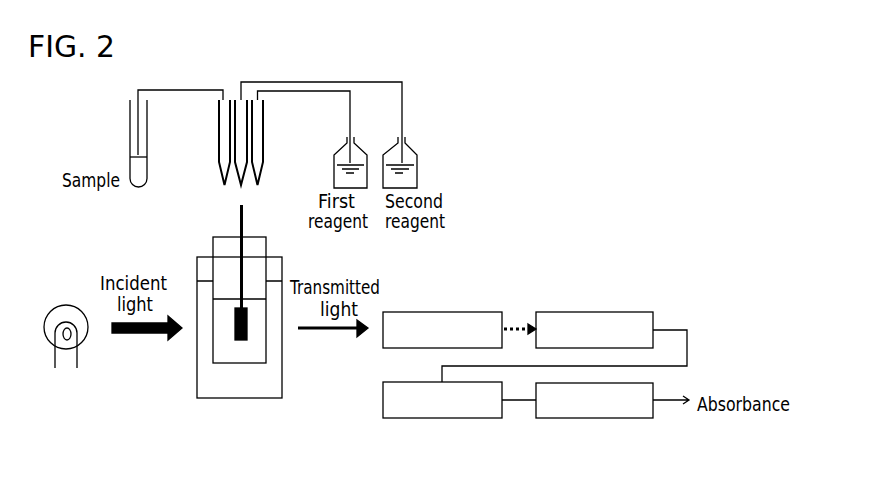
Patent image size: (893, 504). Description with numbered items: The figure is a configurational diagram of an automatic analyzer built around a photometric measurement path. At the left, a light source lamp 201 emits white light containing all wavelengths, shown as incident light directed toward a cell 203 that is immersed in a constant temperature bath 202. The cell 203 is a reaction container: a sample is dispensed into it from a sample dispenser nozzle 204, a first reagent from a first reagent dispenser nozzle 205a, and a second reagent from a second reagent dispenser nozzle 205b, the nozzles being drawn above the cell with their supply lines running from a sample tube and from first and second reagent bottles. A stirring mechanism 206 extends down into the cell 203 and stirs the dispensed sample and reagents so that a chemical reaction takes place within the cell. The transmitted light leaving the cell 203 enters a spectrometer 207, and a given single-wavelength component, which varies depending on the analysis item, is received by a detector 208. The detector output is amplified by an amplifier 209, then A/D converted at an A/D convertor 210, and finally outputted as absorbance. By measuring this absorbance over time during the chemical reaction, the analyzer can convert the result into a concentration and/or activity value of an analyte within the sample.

The light source lamp 201 is at (59, 304).
The constant temperature bath 202 is at (237, 400).
The cell 203 is at (266, 347).
The sample dispenser nozzle 204 is at (219, 166).
The first reagent dispenser nozzle 205a is at (238, 99).
The second reagent dispenser nozzle 205b is at (303, 143).
The stirring mechanism 206 is at (238, 206).
The spectrometer 207 is at (443, 310).
The detector 208 is at (600, 310).
The amplifier 209 is at (443, 420).
The A/D convertor 210 is at (600, 420).